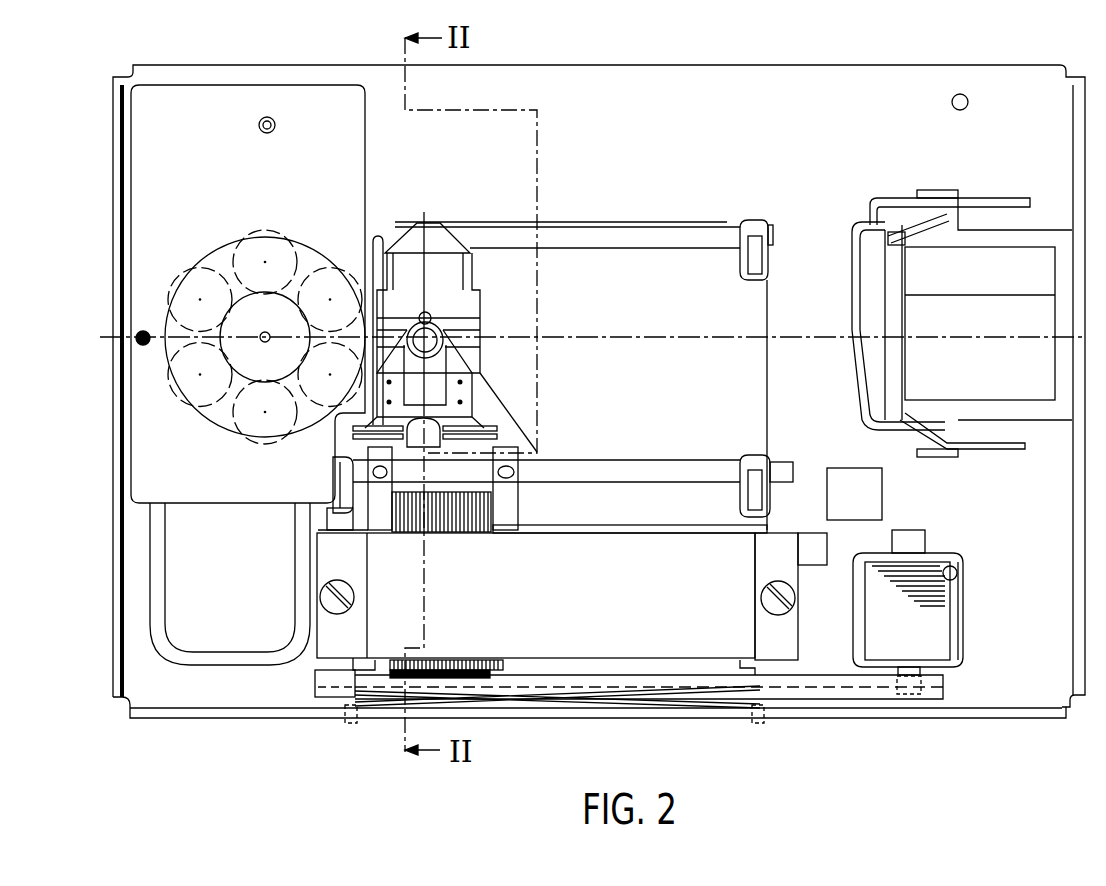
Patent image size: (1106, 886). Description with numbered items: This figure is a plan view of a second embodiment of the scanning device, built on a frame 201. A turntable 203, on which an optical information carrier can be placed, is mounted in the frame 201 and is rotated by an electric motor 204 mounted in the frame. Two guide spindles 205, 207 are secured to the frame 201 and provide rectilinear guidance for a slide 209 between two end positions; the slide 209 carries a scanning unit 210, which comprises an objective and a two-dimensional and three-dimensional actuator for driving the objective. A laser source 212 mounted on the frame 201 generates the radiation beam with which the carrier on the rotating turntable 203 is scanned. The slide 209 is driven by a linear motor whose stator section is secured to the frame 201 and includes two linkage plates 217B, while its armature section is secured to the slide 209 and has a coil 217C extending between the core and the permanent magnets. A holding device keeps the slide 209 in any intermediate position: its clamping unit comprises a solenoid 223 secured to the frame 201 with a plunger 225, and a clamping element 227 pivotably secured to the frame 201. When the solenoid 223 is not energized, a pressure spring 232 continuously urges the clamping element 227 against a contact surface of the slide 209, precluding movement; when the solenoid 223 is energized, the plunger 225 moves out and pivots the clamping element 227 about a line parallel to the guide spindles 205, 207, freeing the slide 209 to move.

The frame 201 is at (175, 712).
The turntable 203 is at (228, 258).
The electric motor 204 is at (185, 305).
The guide spindle 205 is at (703, 476).
The guide spindle 207 is at (685, 235).
The slide 209 is at (475, 302).
The scanning unit 210 is at (462, 366).
The laser source 212 is at (1030, 385).
The linkage plate 217B is at (548, 568).
The coil 217C is at (462, 512).
The solenoid 223 is at (923, 580).
The plunger 225 is at (935, 668).
The clamping element 227 is at (855, 683).
The pressure spring 232 is at (480, 702).